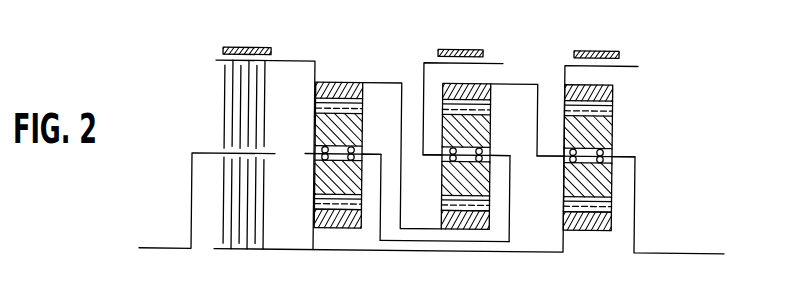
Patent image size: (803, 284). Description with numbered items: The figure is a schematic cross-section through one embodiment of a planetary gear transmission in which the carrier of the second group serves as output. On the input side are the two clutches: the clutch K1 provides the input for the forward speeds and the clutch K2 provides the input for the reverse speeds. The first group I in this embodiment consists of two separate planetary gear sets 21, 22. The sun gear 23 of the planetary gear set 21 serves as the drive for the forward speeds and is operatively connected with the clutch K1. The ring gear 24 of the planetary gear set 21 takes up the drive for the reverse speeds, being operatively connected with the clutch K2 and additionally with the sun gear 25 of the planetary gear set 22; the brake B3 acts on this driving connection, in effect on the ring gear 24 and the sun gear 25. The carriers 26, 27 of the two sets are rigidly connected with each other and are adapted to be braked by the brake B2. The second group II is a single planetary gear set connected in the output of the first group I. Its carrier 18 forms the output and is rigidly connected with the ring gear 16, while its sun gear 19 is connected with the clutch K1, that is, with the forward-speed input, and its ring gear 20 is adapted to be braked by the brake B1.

The ring gear 16 is at (480, 92).
The carrier 18 is at (637, 202).
The sun gear 19 is at (594, 230).
The ring gear 20 is at (613, 91).
The planetary gear set 21 is at (364, 150).
The planetary gear set 22 is at (497, 153).
The sun gear 23 is at (344, 230).
The ring gear 24 is at (341, 88).
The sun gear 25 is at (472, 230).
The carrier 26 is at (416, 245).
The carrier 27 is at (424, 159).
The brake B1 is at (608, 46).
The brake B2 is at (470, 47).
The brake B3 is at (258, 46).
The clutch K1 is at (245, 206).
The clutch K2 is at (247, 115).
The first group I is at (374, 70).
The second group II is at (661, 121).